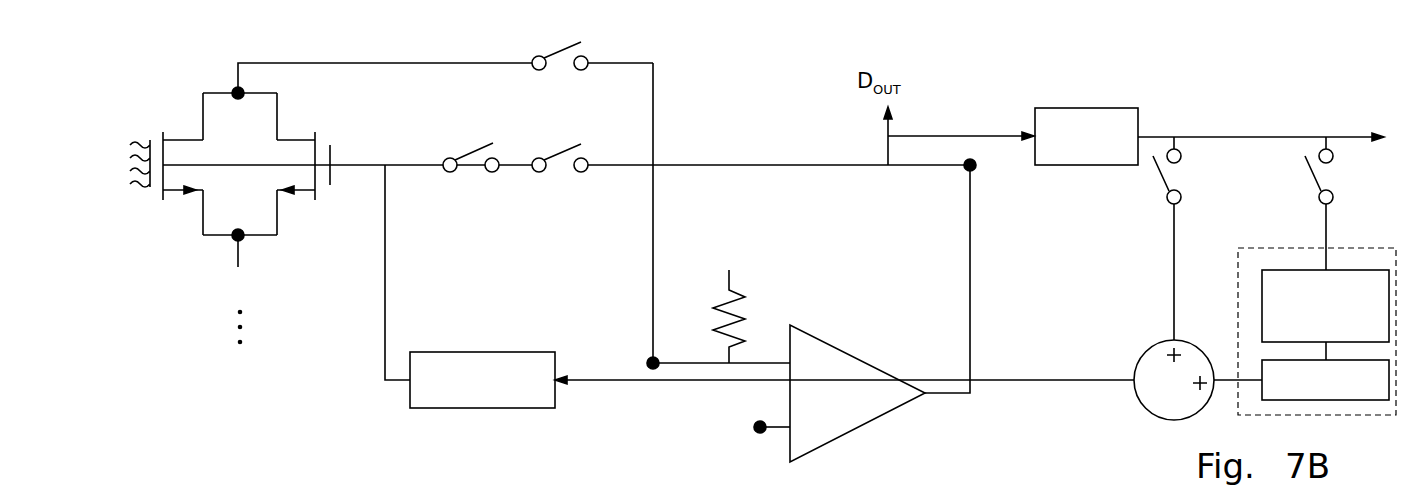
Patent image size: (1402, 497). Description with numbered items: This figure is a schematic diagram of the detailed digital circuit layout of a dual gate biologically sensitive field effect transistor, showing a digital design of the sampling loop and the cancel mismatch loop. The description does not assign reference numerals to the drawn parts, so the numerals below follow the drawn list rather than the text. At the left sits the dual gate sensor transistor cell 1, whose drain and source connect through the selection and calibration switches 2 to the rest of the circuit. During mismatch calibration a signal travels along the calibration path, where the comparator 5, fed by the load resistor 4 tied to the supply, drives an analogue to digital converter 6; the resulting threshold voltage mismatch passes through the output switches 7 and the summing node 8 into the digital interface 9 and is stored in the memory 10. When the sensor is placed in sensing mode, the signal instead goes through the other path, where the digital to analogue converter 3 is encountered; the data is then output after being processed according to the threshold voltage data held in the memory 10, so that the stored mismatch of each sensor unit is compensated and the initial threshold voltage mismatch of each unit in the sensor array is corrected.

The floating-gate transistor cell (D 1 , S 1 , VBG 1 ) 1 is at (294, 195).
The selection and calibration switches Sel n , Cal 2 is at (706, 93).
The DAC n 3 is at (482, 380).
The load resistor to VDD 4 is at (732, 298).
The comparator / op-amp 5 is at (816, 393).
The ADC 6 is at (1209, 131).
The Cal / Cal-bar output switches 7 is at (1227, 165).
The summing node 8 is at (1198, 380).
The digital interface 9 is at (1317, 331).
The memory 10 is at (1325, 380).